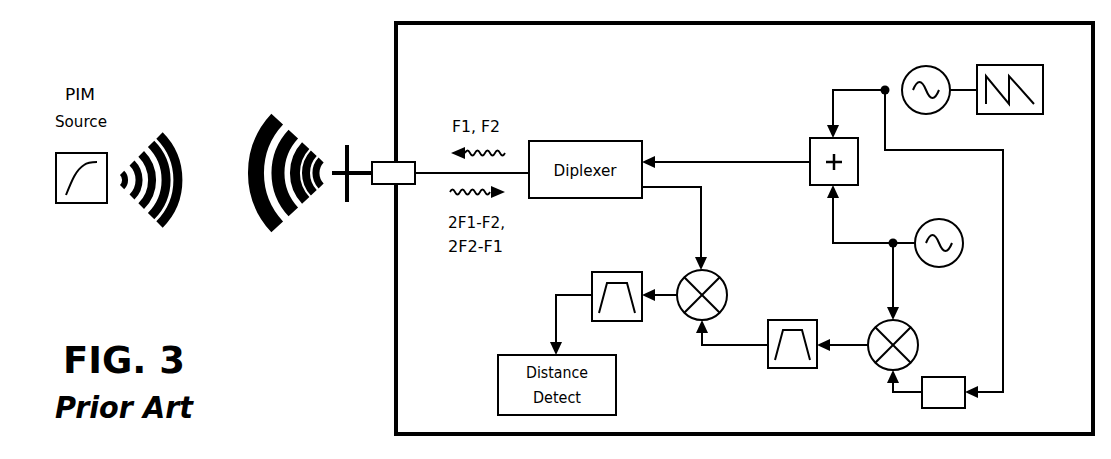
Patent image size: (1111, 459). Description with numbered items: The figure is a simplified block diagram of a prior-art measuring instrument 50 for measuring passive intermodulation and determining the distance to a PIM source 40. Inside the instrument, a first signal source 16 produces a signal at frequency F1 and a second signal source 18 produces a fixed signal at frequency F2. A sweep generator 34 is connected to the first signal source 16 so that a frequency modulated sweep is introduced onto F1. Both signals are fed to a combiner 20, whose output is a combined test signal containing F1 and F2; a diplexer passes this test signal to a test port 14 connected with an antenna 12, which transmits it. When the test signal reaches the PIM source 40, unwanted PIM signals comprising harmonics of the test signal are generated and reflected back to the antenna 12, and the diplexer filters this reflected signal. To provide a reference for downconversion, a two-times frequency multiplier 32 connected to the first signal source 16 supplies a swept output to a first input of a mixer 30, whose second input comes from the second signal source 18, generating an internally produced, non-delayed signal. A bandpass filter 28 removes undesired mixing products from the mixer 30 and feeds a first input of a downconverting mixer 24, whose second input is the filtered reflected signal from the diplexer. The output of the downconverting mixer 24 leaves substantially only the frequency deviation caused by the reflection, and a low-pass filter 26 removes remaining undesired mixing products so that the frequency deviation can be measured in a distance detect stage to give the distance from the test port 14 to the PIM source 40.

The antenna 12 is at (326, 119).
The test port 14 is at (386, 184).
The first signal source 16 is at (921, 113).
The second signal source 18 is at (940, 268).
The combiner 20 is at (818, 187).
The downconverting mixer 24 is at (724, 284).
The low-pass filter 26 is at (623, 321).
The bandpass filter 28 is at (796, 368).
The mixer 30 is at (908, 323).
The 2× frequency multiplier 32 is at (942, 377).
The sweep generator 34 is at (993, 114).
The PIM source 40 is at (88, 204).
The measuring instrument 50 is at (421, 421).